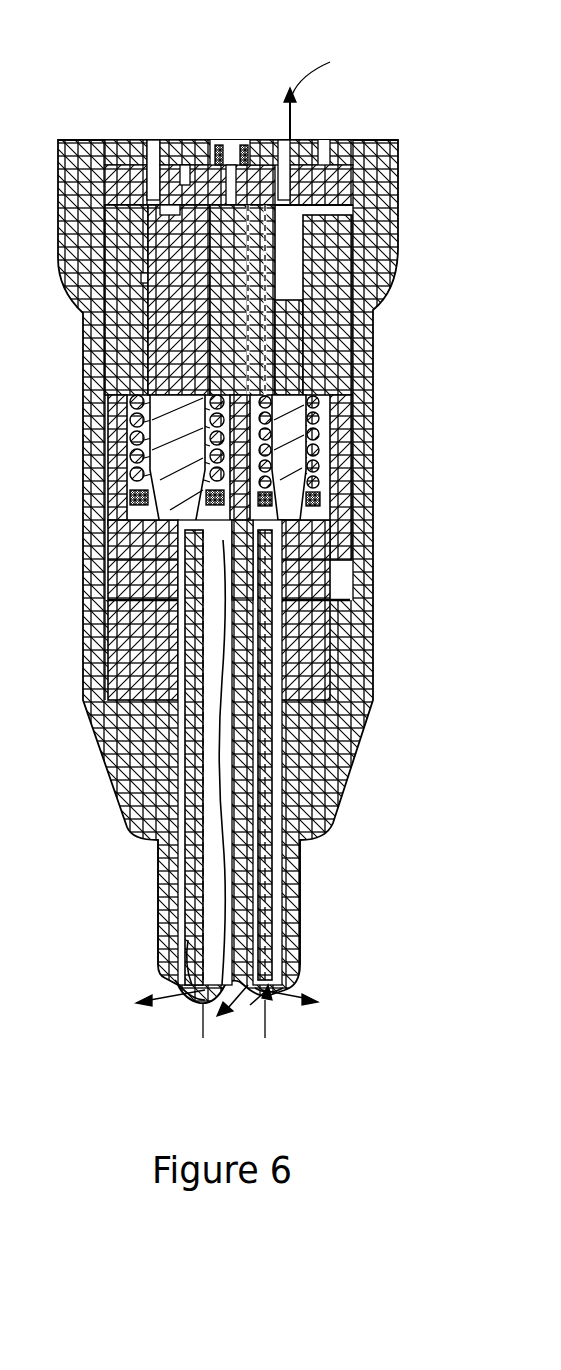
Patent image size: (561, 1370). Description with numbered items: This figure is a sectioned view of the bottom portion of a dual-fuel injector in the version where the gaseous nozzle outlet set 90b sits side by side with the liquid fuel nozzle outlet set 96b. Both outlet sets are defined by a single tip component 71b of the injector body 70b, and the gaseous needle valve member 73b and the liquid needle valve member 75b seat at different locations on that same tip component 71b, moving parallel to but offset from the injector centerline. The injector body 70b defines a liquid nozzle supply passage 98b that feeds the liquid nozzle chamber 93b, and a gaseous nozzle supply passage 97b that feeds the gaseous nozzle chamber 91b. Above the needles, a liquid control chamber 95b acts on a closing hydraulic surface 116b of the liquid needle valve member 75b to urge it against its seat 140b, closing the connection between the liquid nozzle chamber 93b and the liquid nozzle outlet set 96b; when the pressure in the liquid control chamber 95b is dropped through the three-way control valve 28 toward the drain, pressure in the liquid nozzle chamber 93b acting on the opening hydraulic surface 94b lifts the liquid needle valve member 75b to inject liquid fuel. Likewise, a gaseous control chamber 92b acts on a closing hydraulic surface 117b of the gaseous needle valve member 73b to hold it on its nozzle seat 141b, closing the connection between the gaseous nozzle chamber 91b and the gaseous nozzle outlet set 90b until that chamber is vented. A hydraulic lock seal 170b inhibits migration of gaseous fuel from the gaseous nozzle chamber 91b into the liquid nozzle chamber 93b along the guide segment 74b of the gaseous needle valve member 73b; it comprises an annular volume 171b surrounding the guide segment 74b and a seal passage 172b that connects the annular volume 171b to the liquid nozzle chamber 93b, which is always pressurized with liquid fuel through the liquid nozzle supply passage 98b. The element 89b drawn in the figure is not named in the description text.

The control valve 28 is at (318, 88).
The injector body 70b is at (373, 425).
The tip component 71b is at (300, 880).
The gaseous needle valve member 73b is at (115, 770).
The guide segment 74b is at (108, 300).
The liquid needle valve member 75b is at (148, 365).
The first needle 89b is at (192, 855).
The gaseous nozzle outlet set 90b is at (172, 985).
The gaseous nozzle chamber 91b is at (110, 582).
The gaseous control chamber 92b is at (152, 198).
The liquid nozzle chamber 93b is at (320, 565).
The opening hydraulic surface 94b is at (303, 318).
The liquid control chamber 95b is at (300, 200).
The liquid nozzle outlet set 96b is at (290, 985).
The gaseous nozzle supply passage 97b is at (125, 395).
The liquid nozzle supply passage 98b is at (303, 290).
The closing hydraulic surface 116b is at (296, 205).
The closing hydraulic surface 117b is at (180, 210).
The seat 140b is at (278, 965).
The nozzle seat 141b is at (190, 965).
The hydraulic lock seal 170b is at (228, 263).
The annular volume 171b is at (142, 278).
The seal passage 172b is at (225, 165).